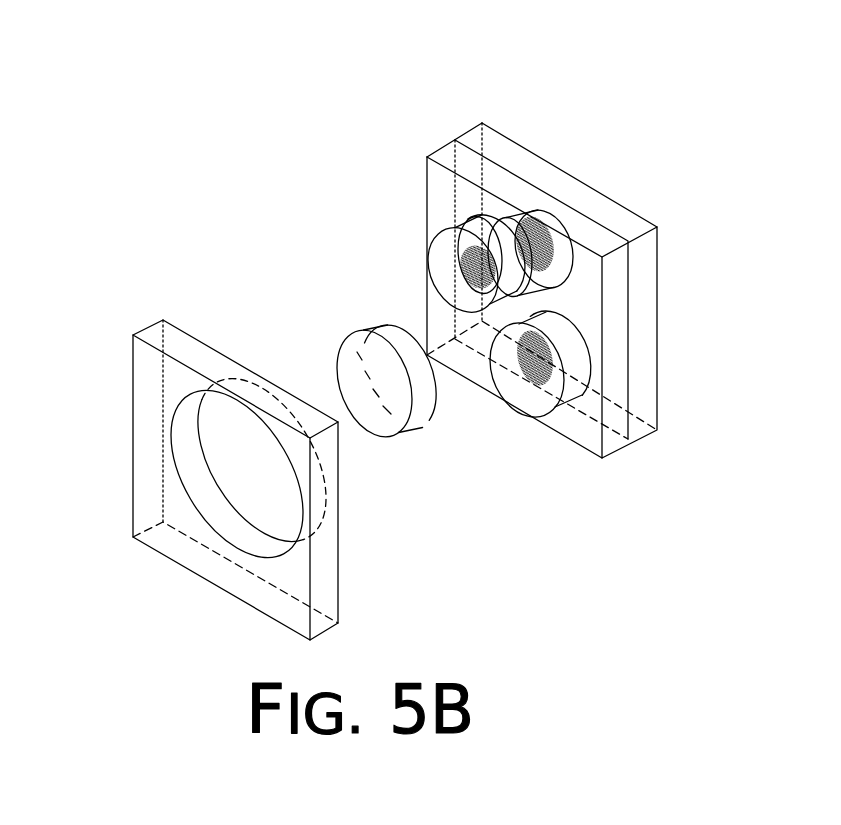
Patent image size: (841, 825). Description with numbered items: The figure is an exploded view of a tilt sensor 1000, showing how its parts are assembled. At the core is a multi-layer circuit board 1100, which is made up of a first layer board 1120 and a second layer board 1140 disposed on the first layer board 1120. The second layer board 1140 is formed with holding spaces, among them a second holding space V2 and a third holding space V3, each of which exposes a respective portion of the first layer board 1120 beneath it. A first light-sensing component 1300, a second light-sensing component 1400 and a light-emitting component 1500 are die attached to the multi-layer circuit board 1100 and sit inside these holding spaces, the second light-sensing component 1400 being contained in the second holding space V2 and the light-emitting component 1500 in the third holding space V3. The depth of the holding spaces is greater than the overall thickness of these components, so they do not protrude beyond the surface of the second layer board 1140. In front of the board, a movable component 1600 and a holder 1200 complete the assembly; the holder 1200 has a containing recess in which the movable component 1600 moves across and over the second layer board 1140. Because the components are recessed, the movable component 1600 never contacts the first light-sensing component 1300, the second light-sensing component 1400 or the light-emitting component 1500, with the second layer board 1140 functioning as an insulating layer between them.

The tilt sensor 1000 is at (634, 568).
The multi-layer circuit board 1100 is at (475, 58).
The first layer board 1120 is at (484, 158).
The second layer board 1140 is at (440, 157).
The holder 1200 is at (152, 336).
The first light-sensing component 1300 is at (527, 230).
The second light-sensing component 1400 is at (530, 335).
The light-emitting component 1500 is at (440, 285).
The movable component 1600 is at (354, 342).
The second holding space V2 is at (470, 228).
The third holding space V3 is at (440, 270).